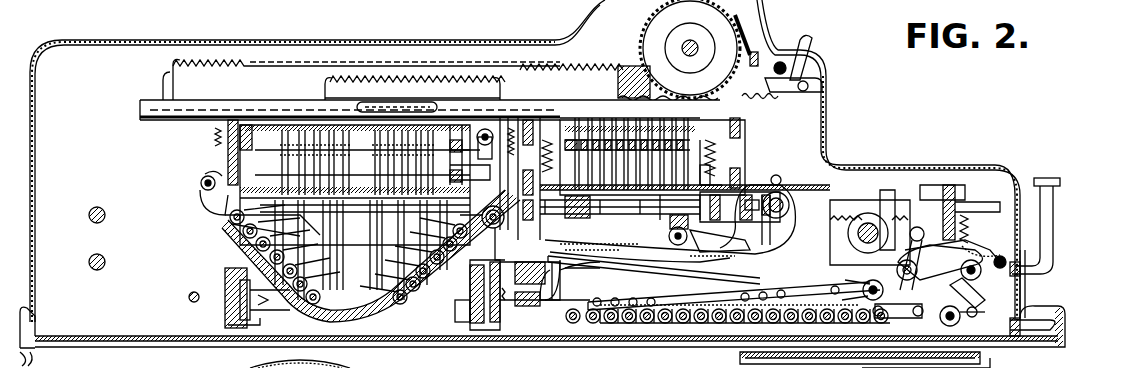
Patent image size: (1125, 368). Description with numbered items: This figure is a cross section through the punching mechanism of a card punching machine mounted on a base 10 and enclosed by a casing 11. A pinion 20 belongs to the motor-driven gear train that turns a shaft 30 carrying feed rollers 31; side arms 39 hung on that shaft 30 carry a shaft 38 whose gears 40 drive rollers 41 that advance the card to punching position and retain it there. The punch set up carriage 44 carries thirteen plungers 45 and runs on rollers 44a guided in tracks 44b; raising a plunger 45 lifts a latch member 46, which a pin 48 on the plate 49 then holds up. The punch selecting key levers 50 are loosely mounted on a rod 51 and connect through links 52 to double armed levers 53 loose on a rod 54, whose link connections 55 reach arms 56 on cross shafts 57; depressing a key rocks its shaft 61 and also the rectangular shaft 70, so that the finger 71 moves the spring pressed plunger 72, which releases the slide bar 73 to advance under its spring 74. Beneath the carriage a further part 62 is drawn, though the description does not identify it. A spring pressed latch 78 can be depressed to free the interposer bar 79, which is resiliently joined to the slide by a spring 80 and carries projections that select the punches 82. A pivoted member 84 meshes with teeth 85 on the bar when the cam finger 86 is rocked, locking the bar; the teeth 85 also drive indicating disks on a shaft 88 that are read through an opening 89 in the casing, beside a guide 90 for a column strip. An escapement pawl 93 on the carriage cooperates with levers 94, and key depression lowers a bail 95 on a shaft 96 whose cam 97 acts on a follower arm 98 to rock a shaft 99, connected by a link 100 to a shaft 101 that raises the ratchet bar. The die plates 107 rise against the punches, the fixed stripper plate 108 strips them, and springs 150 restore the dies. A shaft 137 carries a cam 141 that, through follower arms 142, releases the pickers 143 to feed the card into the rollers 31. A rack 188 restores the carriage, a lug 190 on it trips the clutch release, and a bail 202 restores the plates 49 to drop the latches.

The base 10 is at (1060, 318).
The casing 11 is at (545, 40).
The pinion 20 is at (485, 128).
The shaft 30 is at (780, 195).
The feed rollers 31 is at (782, 226).
The shaft 38 is at (660, 250).
The side arms 39 is at (775, 258).
The gears 40 is at (665, 230).
The rollers 41 is at (658, 226).
The punch set up carriage 44 is at (310, 312).
The rollers 44a is at (225, 276).
The tracks 44b is at (225, 296).
The plungers 45 is at (395, 244).
The latch members 46 is at (378, 188).
The pin 48 is at (490, 228).
The plate 49 is at (354, 170).
The punch selecting key levers 50 is at (1055, 222).
The rod 51 is at (915, 274).
The links 52 is at (900, 318).
The double armed levers 53 is at (870, 300).
The rod 54 is at (850, 346).
The link connections 55 is at (678, 298).
The arms 56 is at (652, 320).
The cross shafts 57 is at (704, 320).
The shaft 61 is at (228, 246).
The rollers 62 is at (415, 300).
The shaft 70 is at (200, 184).
The finger 71 is at (215, 172).
The spring pressed plunger 72 is at (215, 148).
The slide bar 73 is at (165, 86).
The spring 74 is at (210, 60).
The spring pressed latch 78 is at (516, 182).
The interposer bar 79 is at (570, 105).
The spring 80 is at (418, 75).
The punches 82 is at (680, 128).
The pivoted member 84 is at (750, 96).
The teeth 85 is at (705, 100).
The cam finger 86 is at (810, 50).
The shaft 88 is at (685, 45).
The opening 89 is at (745, 26).
The guide 90 is at (758, 48).
The escapement pawl 93 is at (488, 325).
The levers 94 is at (548, 272).
The bail 95 is at (1025, 270).
The shaft 96 is at (980, 272).
The cam 97 is at (988, 290).
The follower arm 98 is at (963, 318).
The shaft 99 is at (950, 326).
The link 100 is at (640, 262).
The shaft 101 is at (552, 310).
The die plates 107 is at (600, 208).
The stripper plate 108 is at (726, 144).
The shaft 137 is at (910, 172).
The cam 141 is at (862, 210).
The follower arm 142 is at (918, 178).
The pickers 143 is at (985, 200).
The springs 150 is at (726, 160).
The rack 188 is at (470, 322).
The lug 190 is at (240, 320).
The bail 202 is at (480, 160).